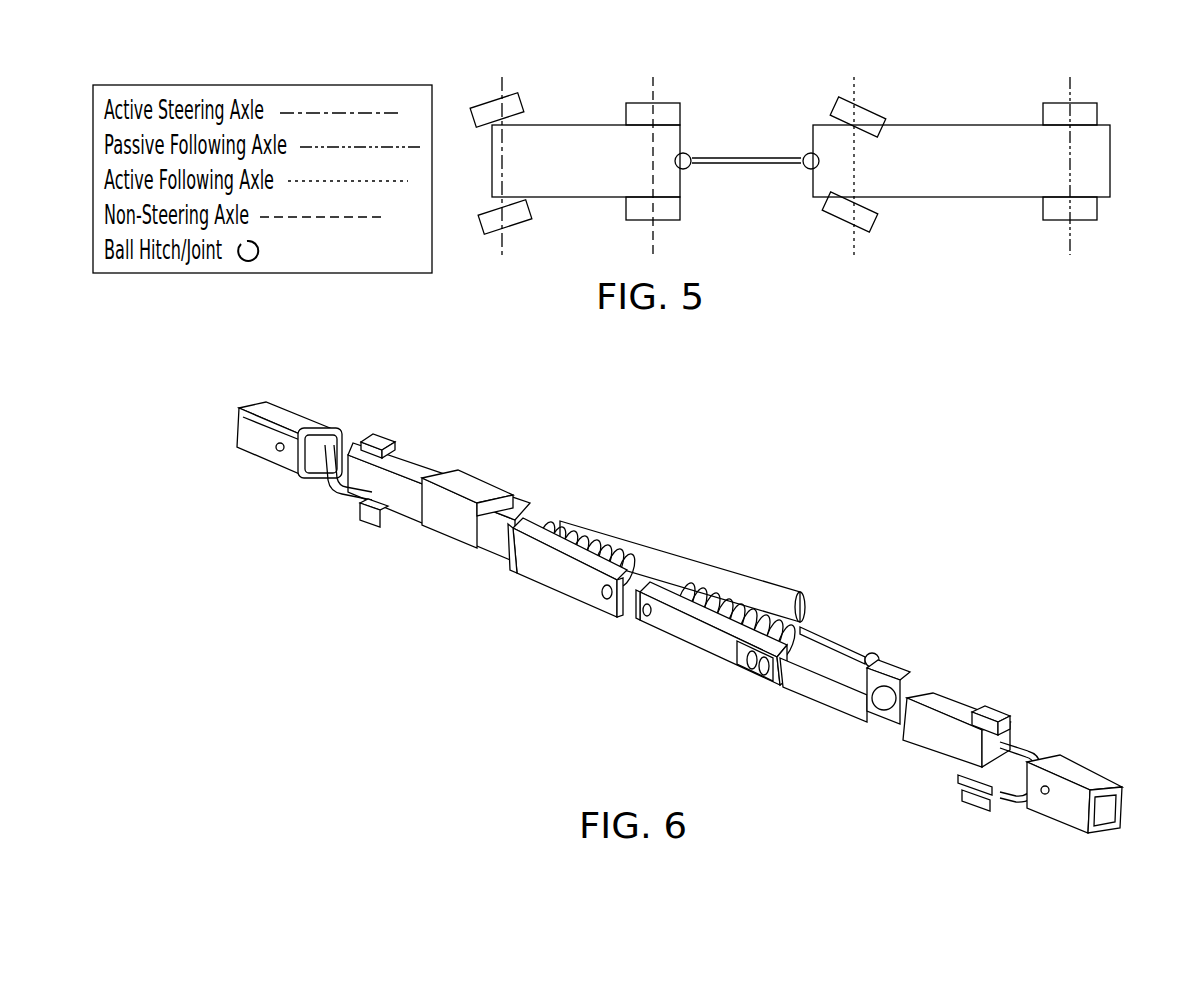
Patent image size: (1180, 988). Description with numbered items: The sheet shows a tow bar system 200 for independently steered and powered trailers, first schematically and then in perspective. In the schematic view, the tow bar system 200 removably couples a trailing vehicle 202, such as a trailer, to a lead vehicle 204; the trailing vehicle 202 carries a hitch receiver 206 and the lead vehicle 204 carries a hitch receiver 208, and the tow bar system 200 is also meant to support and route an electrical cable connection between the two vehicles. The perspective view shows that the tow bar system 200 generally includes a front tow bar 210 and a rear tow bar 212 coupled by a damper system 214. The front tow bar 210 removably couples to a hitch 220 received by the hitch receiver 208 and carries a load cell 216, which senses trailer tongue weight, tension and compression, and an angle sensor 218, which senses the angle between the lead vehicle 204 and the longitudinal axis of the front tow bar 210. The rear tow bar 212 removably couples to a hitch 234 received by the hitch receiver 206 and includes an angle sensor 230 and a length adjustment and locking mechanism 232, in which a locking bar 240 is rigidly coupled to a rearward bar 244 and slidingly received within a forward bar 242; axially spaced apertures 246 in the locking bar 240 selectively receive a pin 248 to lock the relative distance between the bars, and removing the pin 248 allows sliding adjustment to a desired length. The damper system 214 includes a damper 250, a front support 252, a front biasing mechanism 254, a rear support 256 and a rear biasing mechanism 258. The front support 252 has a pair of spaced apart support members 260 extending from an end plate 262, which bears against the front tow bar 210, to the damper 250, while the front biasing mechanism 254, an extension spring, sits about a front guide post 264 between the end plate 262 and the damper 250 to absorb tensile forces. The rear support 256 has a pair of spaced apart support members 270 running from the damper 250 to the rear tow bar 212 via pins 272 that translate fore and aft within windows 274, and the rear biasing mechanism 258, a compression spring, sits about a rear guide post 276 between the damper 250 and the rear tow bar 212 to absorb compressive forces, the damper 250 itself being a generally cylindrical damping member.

In FIG. 5, the tow bar system 200 is at (723, 142).
In FIG. 6, the tow bar system 200 is at (1082, 465).
In FIG. 5, the trailing vehicle 202 is at (966, 112).
In FIG. 5, the lead vehicle 204 is at (581, 104).
In FIG. 5, the hitch receiver 206 is at (803, 152).
In FIG. 6, the hitch receiver 206 is at (1052, 760).
In FIG. 5, the hitch receiver 208 is at (687, 148).
In FIG. 6, the hitch receiver 208 is at (293, 428).
In FIG. 6, the front tow bar 210 is at (445, 557).
In FIG. 6, the rear tow bar 212 is at (913, 618).
In FIG. 6, the damper system 214 is at (717, 527).
In FIG. 6, the load cell 216 is at (477, 493).
In FIG. 6, the angle sensor 218 is at (373, 432).
In FIG. 6, the hitch 220 is at (360, 520).
In FIG. 6, the angle sensor 230 is at (992, 710).
In FIG. 6, the length adjustment and locking mechanism 232 is at (860, 697).
In FIG. 6, the hitch 234 is at (960, 782).
In FIG. 6, the locking bar 240 is at (893, 707).
In FIG. 6, the forward bar 242 is at (807, 687).
In FIG. 6, the rearward bar 244 is at (952, 707).
In FIG. 6, the apertures 246 is at (915, 680).
In FIG. 6, the pin 248 is at (874, 652).
In FIG. 6, the damper 250 is at (617, 612).
In FIG. 6, the front support 252 is at (507, 577).
In FIG. 6, the front biasing mechanism 254 is at (597, 538).
In FIG. 6, the rear support 256 is at (682, 662).
In FIG. 6, the rear biasing mechanism 258 is at (785, 615).
In FIG. 6, the support members 260 is at (558, 573).
In FIG. 6, the end plate 262 is at (523, 583).
In FIG. 6, the front guide post 264 is at (570, 525).
In FIG. 6, the support members 270 is at (667, 640).
In FIG. 6, the pins 272 is at (812, 622).
In FIG. 6, the window 274 is at (740, 663).
In FIG. 6, the rear guide post 276 is at (727, 593).